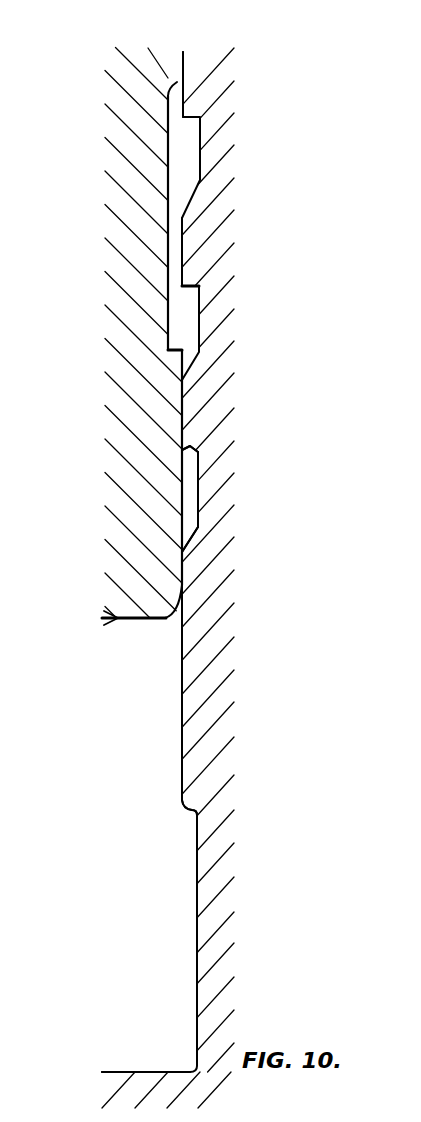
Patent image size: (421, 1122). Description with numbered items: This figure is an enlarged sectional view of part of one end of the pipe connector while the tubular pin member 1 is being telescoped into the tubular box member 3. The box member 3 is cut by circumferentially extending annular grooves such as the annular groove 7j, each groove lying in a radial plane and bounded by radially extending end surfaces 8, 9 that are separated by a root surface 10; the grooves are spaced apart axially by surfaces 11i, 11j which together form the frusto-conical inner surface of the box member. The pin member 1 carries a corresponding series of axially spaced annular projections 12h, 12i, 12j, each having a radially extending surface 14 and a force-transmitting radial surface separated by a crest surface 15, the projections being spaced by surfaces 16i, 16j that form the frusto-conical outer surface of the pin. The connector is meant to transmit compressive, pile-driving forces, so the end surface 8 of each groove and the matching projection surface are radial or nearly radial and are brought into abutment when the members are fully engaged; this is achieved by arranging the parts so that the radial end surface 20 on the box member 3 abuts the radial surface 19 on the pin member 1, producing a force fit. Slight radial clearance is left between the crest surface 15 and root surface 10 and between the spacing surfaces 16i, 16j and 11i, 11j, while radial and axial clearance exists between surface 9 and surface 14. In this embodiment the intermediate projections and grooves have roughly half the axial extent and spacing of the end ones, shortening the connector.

The tubular pin member 1 is at (200, 668).
The tubular box member 3 is at (130, 443).
The annular groove 7j is at (169, 320).
The radially extending end surface 8 is at (175, 351).
The radially extending end surface 9 is at (177, 82).
The root surface 10 is at (169, 220).
The surface 11i is at (184, 60).
The surface 11j is at (180, 498).
The annular projection 12h is at (182, 253).
The annular projection 12i is at (184, 404).
The annular projection 12j is at (188, 703).
The radially extending surface 14 is at (200, 528).
The crest surface 15 is at (181, 645).
The surface 16i is at (200, 482).
The surface 16j is at (197, 929).
The radial surface 19 is at (125, 1072).
The radial end surface 20 is at (106, 622).